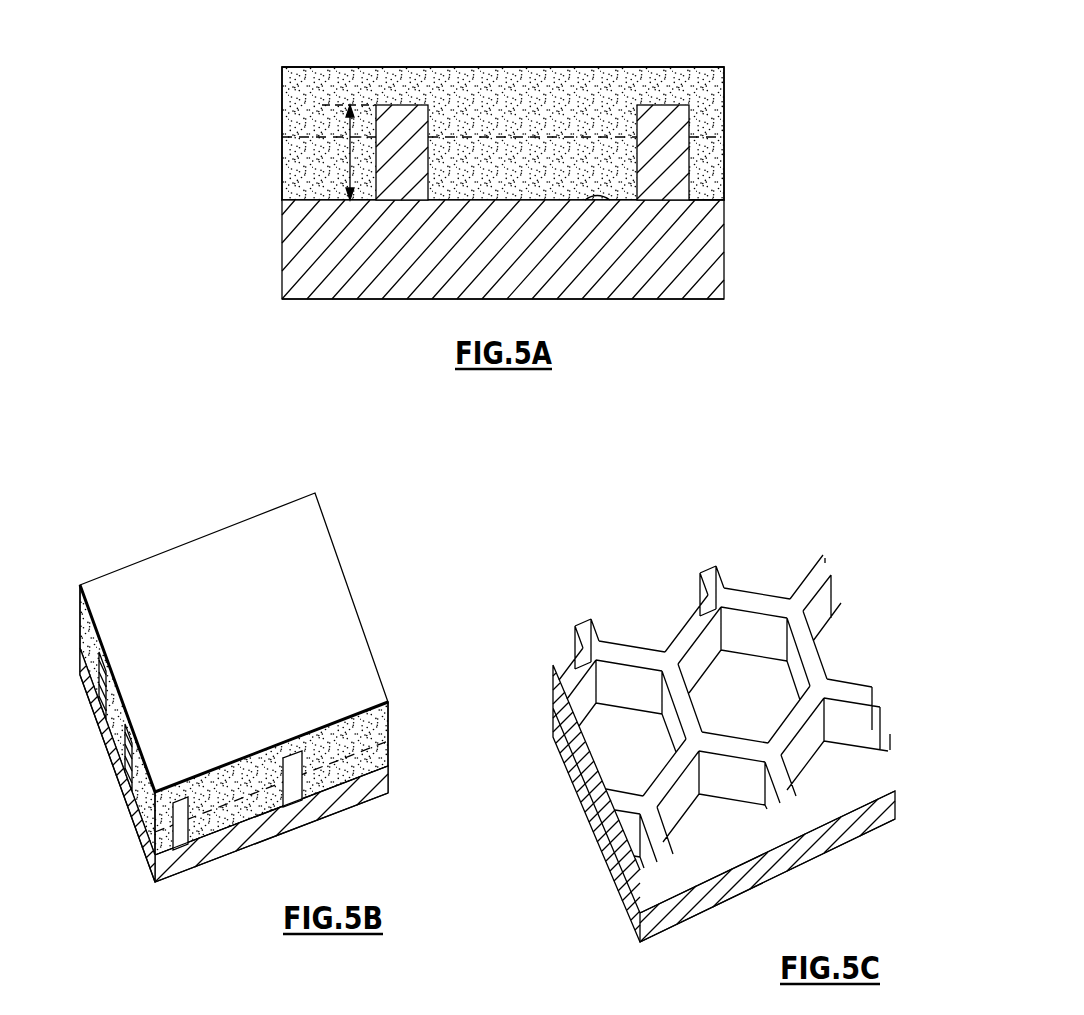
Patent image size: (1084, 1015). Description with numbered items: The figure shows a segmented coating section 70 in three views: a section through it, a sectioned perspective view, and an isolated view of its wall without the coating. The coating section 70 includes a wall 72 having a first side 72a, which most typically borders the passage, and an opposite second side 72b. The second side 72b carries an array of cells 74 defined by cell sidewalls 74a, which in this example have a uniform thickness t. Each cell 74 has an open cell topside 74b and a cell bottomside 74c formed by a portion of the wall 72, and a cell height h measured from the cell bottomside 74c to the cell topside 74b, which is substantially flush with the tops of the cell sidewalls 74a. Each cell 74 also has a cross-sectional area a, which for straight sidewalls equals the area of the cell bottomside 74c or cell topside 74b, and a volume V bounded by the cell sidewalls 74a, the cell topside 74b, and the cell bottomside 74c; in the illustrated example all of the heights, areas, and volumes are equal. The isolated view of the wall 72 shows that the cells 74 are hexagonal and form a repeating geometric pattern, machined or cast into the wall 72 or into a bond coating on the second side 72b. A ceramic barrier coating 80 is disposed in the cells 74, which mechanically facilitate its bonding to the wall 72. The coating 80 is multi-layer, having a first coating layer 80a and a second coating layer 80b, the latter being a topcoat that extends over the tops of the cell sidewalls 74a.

In FIG. 5A, the coating section 70 is at (250, 254).
In FIG. 5B, the coating section 70 is at (112, 855).
In FIG. 5A, the wall 72 is at (362, 312).
In FIG. 5B, the wall 72 is at (192, 884).
In FIG. 5C, the wall 72 is at (693, 936).
In FIG. 5A, the first side 72a is at (623, 300).
In FIG. 5B, the first side 72a is at (312, 824).
In FIG. 5C, the first side 72a is at (886, 822).
In FIG. 5A, the second side 72b is at (712, 200).
In FIG. 5B, the second side 72b is at (379, 750).
In FIG. 5C, the second side 72b is at (891, 805).
In FIG. 5A, the cells 74 is at (512, 112).
In FIG. 5B, the cells 74 is at (224, 788).
In FIG. 5C, the cells 74 is at (745, 652).
In FIG. 5A, the cell sidewalls 74a is at (430, 118).
In FIG. 5B, the cell sidewalls 74a is at (303, 758).
In FIG. 5C, the cell sidewalls 74a is at (786, 672).
In FIG. 5A, the cell topside 74b is at (598, 100).
In FIG. 5A, the cell bottomside 74c is at (612, 204).
In FIG. 5A, the coating 80 is at (345, 56).
In FIG. 5B, the coating 80 is at (345, 616).
In FIG. 5A, the first coating layer 80a is at (291, 176).
In FIG. 5B, the first coating layer 80a is at (333, 777).
In FIG. 5A, the second coating layer 80b is at (290, 84).
In FIG. 5B, the second coating layer 80b is at (386, 707).
In FIG. 5A, the cell height h is at (352, 153).
In FIG. 5B, the thickness t is at (198, 808).
In FIG. 5C, the volume V is at (818, 612).
In FIG. 5C, the cross-sectional area a is at (749, 719).